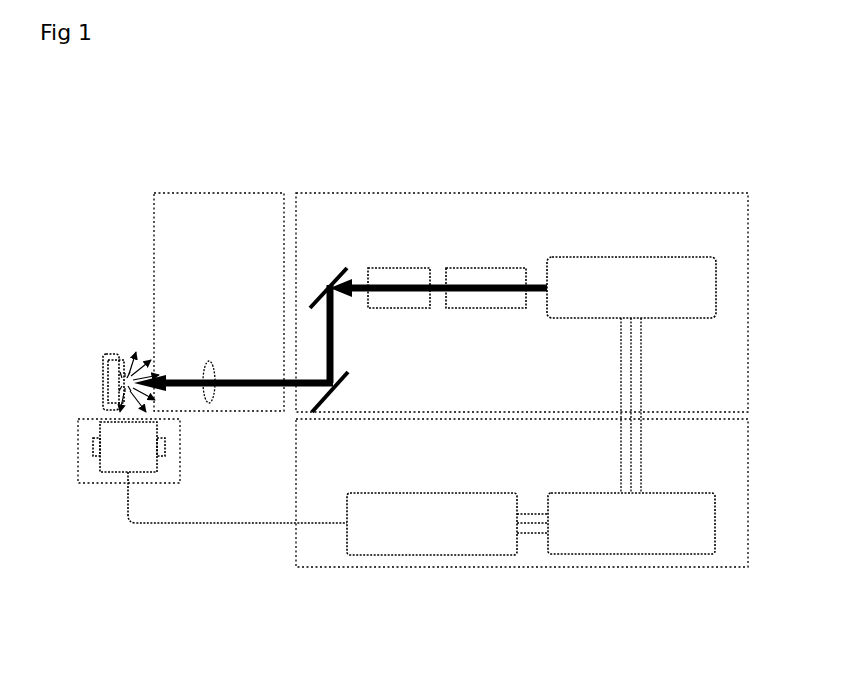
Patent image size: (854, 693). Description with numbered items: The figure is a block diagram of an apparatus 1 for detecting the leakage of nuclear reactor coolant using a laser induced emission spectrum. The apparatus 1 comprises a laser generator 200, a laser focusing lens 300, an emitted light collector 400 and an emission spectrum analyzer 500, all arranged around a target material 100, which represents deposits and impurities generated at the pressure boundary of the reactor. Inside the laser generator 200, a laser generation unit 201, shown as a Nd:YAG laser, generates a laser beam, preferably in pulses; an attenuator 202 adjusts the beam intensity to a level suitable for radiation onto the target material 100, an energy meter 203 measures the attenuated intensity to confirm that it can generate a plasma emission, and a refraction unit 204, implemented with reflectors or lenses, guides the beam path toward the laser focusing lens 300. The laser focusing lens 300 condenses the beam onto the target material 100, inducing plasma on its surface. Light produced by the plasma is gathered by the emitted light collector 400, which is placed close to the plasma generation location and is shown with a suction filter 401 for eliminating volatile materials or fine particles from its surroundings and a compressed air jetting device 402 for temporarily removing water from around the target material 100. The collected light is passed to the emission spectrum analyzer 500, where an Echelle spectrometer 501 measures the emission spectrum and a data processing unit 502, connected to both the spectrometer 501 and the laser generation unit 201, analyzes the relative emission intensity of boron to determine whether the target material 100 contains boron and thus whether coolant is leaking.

The apparatus for detecting the leakage of nuclear reactor coolant 1 is at (566, 128).
The target material 100 is at (103, 378).
The laser generator 200 is at (628, 193).
The laser generation unit 201 is at (630, 257).
The attenuator 202 is at (483, 310).
The energy meter 203 is at (400, 310).
The refraction unit 204 is at (331, 280).
The laser focusing lens 300 is at (220, 193).
The emitted light collector 400 is at (186, 485).
The suction filter 401 is at (93, 446).
The compressed air jetting device 402 is at (165, 446).
The emission spectrum analyzer 500 is at (510, 567).
The Echelle spectrometer 501 is at (432, 493).
The data processing unit 502 is at (672, 493).